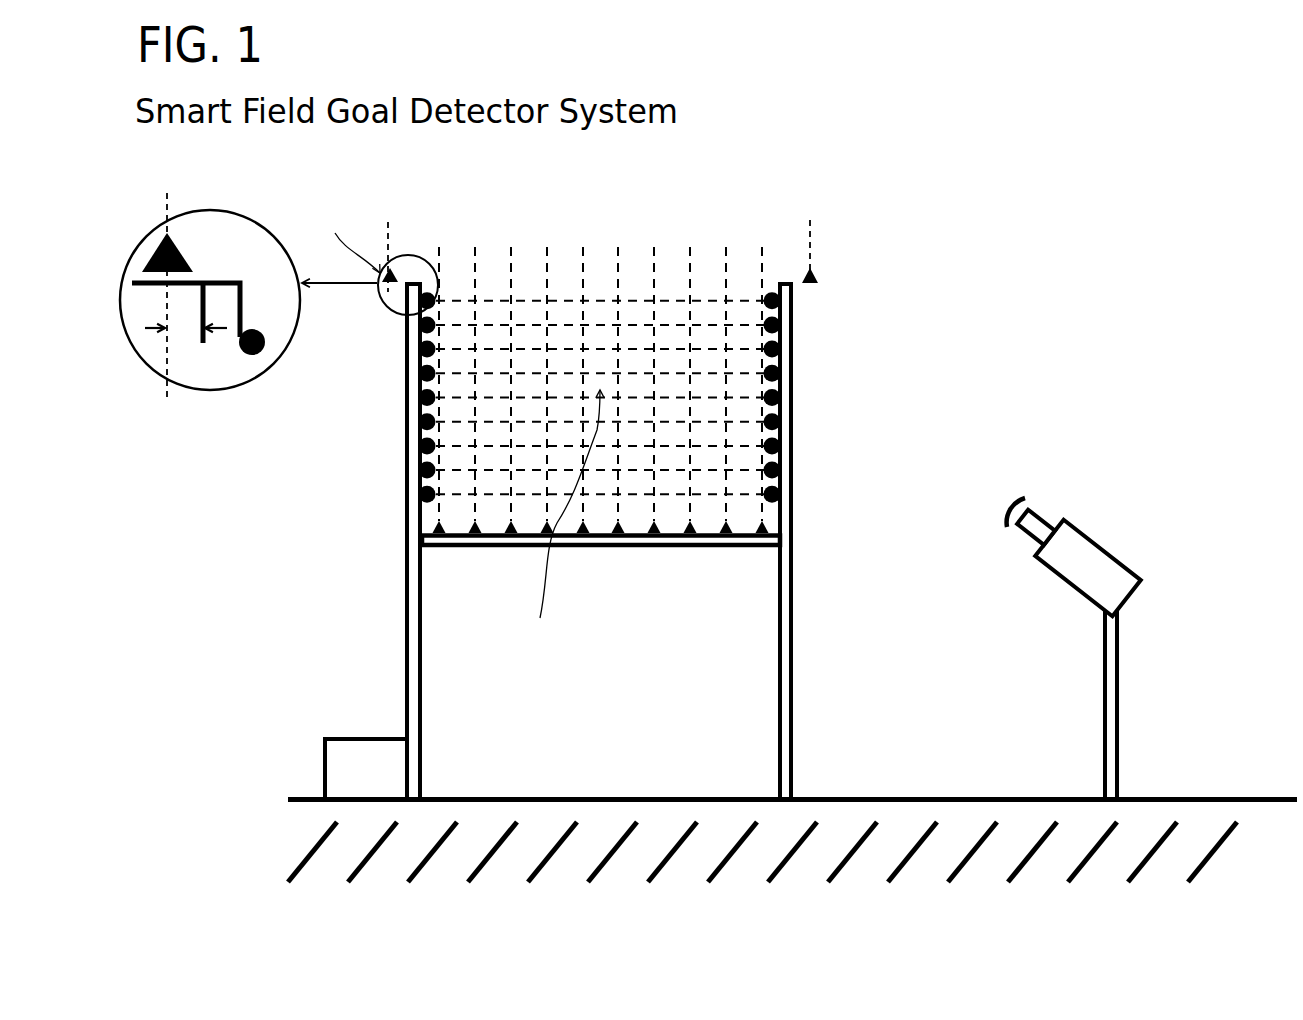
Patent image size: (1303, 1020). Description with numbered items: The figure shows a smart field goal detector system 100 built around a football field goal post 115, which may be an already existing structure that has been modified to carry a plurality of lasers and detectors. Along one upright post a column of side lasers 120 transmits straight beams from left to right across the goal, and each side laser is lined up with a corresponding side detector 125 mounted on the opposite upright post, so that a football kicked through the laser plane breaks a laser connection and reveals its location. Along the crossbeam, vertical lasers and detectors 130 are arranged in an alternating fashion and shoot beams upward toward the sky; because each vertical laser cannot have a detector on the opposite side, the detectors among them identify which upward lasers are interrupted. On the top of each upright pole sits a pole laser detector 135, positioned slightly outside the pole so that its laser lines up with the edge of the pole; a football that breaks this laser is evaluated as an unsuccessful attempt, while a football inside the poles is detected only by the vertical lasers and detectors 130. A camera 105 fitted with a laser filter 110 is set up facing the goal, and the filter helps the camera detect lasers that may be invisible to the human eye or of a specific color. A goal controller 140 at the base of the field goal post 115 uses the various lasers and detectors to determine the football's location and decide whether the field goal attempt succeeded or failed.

The smart field goal detector system 100 is at (1128, 90).
The camera 105 is at (1105, 582).
The laser filter 110 is at (1033, 500).
The field goal post 115 is at (405, 690).
The side lasers 120 is at (418, 397).
The side detectors 125 is at (783, 371).
The vertical lasers and detectors 130 is at (430, 522).
The pole laser detectors 135 is at (818, 278).
The goal controller 140 is at (348, 762).